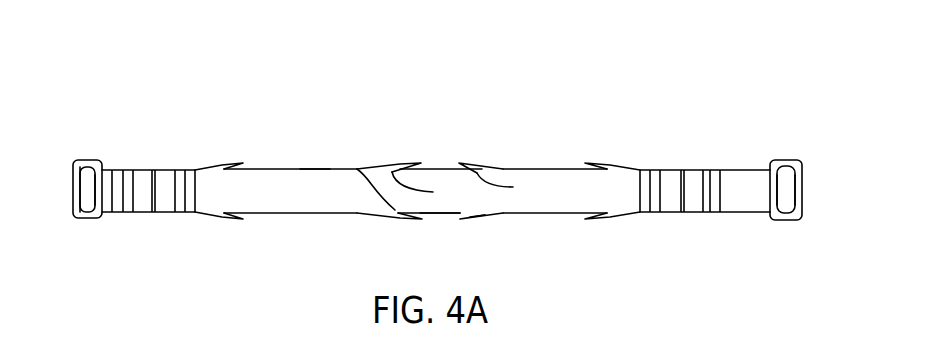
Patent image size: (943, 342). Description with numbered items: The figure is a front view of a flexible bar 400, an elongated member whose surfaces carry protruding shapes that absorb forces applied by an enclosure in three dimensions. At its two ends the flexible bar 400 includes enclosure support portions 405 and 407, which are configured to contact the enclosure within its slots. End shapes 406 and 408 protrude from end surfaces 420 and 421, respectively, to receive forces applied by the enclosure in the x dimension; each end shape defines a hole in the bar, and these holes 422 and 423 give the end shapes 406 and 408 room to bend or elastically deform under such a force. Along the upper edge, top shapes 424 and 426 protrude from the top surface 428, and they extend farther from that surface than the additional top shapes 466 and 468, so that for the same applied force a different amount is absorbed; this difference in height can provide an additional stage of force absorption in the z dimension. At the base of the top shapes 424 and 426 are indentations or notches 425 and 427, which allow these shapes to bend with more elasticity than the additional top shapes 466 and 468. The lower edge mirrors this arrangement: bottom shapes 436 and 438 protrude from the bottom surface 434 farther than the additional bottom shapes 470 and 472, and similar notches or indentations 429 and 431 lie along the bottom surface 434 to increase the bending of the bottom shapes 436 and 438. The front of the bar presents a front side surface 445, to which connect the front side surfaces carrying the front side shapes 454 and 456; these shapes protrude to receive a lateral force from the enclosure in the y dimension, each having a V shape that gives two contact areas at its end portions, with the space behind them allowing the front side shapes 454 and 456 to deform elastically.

The flexible bar 400 is at (260, 84).
The enclosure support portion 405 is at (778, 165).
The end shape 406 is at (803, 188).
The enclosure support portion 407 is at (85, 180).
The end shape 408 is at (77, 188).
The end surface 420 is at (783, 176).
The end surface 421 is at (96, 199).
The hole 422 is at (786, 205).
The hole 423 is at (91, 182).
The top shape 424 is at (393, 163).
The notch 425 is at (428, 188).
The top shape 426 is at (487, 163).
The notch 427 is at (511, 185).
The top surface 428 is at (297, 168).
The notch 429 is at (357, 169).
The notch 431 is at (484, 212).
The bottom surface 434 is at (437, 218).
The bottom shape 436 is at (393, 220).
The bottom shape 438 is at (490, 218).
The front side surface 445 is at (332, 178).
The front side shape 454 is at (670, 178).
The front side shape 456 is at (143, 181).
The additional top shape 466 is at (235, 162).
The additional top shape 468 is at (598, 163).
The additional bottom shape 470 is at (228, 219).
The additional bottom shape 472 is at (595, 220).